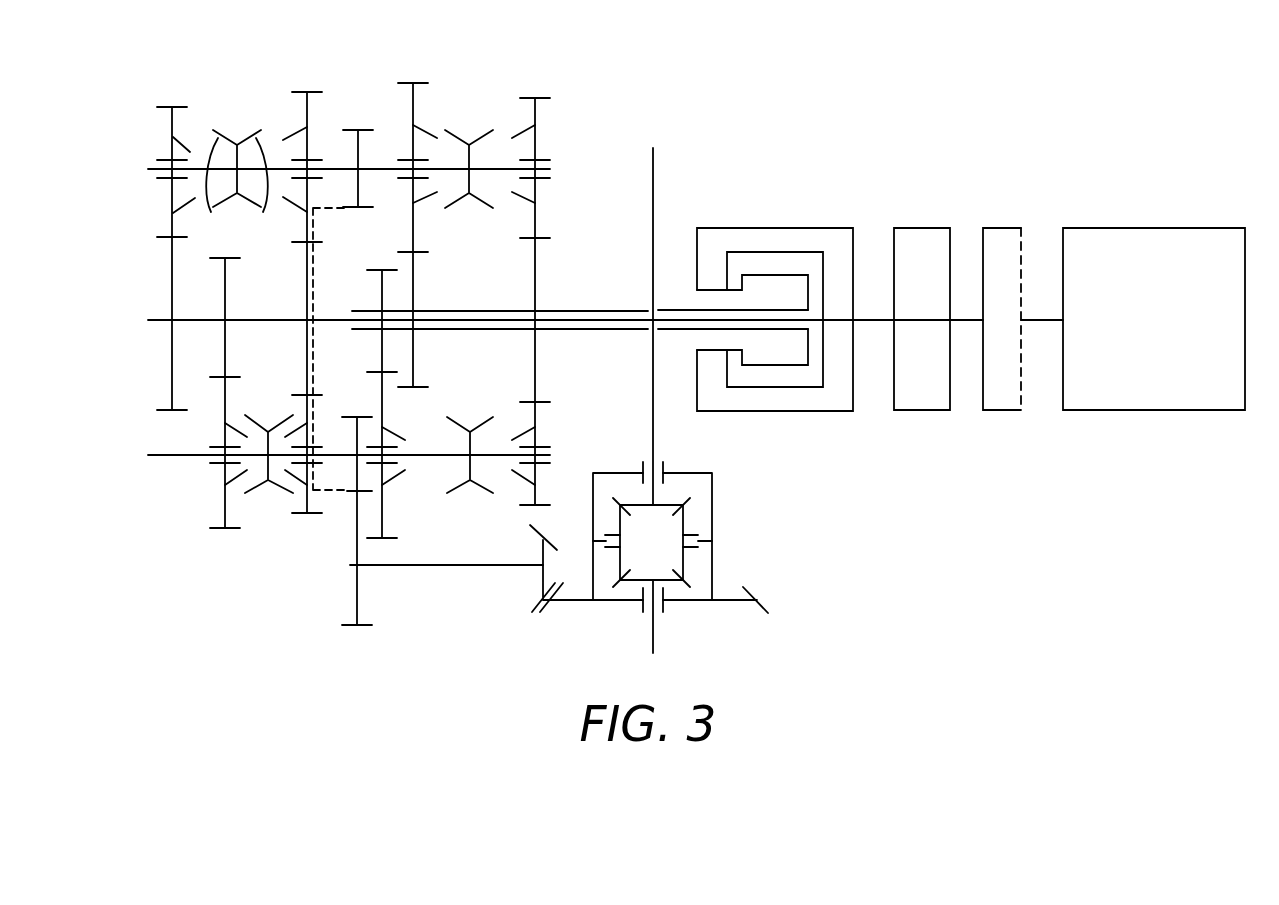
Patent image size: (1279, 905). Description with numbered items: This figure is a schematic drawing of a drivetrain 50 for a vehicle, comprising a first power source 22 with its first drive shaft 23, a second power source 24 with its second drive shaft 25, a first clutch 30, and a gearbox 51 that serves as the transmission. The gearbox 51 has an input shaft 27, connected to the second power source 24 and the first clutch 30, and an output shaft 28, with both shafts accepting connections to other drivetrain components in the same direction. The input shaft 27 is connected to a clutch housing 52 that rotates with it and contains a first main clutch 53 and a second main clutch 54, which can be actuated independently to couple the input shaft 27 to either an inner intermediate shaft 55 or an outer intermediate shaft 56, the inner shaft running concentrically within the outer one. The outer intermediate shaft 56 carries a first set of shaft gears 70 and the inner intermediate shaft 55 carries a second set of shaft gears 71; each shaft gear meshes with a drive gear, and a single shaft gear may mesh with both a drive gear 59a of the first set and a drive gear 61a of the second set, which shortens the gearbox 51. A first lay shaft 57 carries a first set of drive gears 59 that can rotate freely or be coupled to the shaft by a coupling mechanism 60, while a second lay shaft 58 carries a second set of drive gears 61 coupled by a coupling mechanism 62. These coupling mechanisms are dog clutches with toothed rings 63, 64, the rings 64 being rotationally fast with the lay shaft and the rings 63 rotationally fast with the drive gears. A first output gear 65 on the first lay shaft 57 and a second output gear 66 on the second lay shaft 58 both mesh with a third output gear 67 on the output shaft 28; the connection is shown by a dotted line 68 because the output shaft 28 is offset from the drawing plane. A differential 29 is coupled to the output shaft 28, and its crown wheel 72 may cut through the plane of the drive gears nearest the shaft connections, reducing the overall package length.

The first power source 22 is at (1222, 412).
The first drive shaft 23 is at (1040, 318).
The second power source 24 is at (922, 412).
The second drive shaft 25 is at (920, 318).
The input shaft 27 is at (871, 318).
The output shaft 28 is at (462, 568).
The differential 29 is at (700, 617).
The first clutch 30 is at (1002, 412).
The drivetrain 50 is at (782, 84).
The gearbox 51 is at (124, 130).
The clutch housing 52 is at (837, 412).
The first main clutch 53 is at (785, 388).
The second main clutch 54 is at (757, 366).
The inner intermediate shaft 55 is at (672, 308).
The outer intermediate shaft 56 is at (675, 332).
The first lay shaft 57 is at (550, 168).
The second lay shaft 58 is at (148, 455).
The first set of drive gears 59 is at (178, 105).
The drive gear 59a is at (312, 90).
The coupling mechanism 60 is at (237, 135).
The second set of drive gears 61 is at (217, 530).
The drive gear 61a is at (313, 513).
The coupling mechanism 62 is at (268, 490).
The toothed ring 63 is at (190, 145).
The toothed ring 64 is at (240, 216).
The first output gear 65 is at (367, 127).
The second output gear 66 is at (352, 415).
The third output gear 67 is at (350, 630).
The dotted line 68 is at (330, 210).
The first set of shaft gears 70 is at (381, 283).
The second set of shaft gears 71 is at (172, 283).
The crown wheel 72 is at (573, 602).